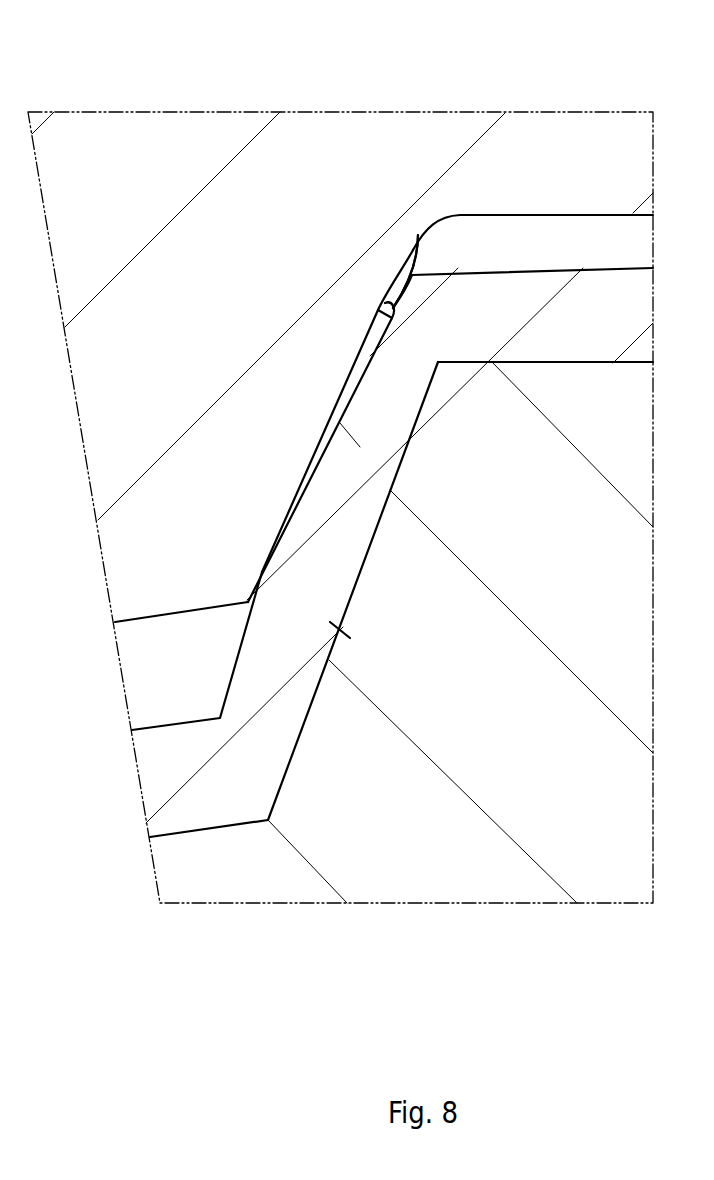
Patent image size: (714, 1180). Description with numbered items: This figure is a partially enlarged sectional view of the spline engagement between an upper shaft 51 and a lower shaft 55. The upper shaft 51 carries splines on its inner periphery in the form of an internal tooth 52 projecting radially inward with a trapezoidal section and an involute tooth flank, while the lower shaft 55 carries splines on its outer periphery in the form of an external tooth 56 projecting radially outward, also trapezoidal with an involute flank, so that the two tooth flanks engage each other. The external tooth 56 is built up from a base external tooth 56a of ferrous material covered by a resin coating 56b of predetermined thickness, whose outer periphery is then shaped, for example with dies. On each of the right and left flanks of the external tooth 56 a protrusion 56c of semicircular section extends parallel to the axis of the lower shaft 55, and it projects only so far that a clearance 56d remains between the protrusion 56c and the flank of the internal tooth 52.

The upper shaft 51 is at (462, 175).
The internal tooth 52 is at (287, 520).
The lower shaft 55 is at (407, 798).
The external tooth 56 is at (237, 662).
The base external tooth 56a is at (340, 630).
The resin coating 56b is at (363, 443).
The protrusion 56c is at (418, 235).
The clearance 56d is at (377, 310).